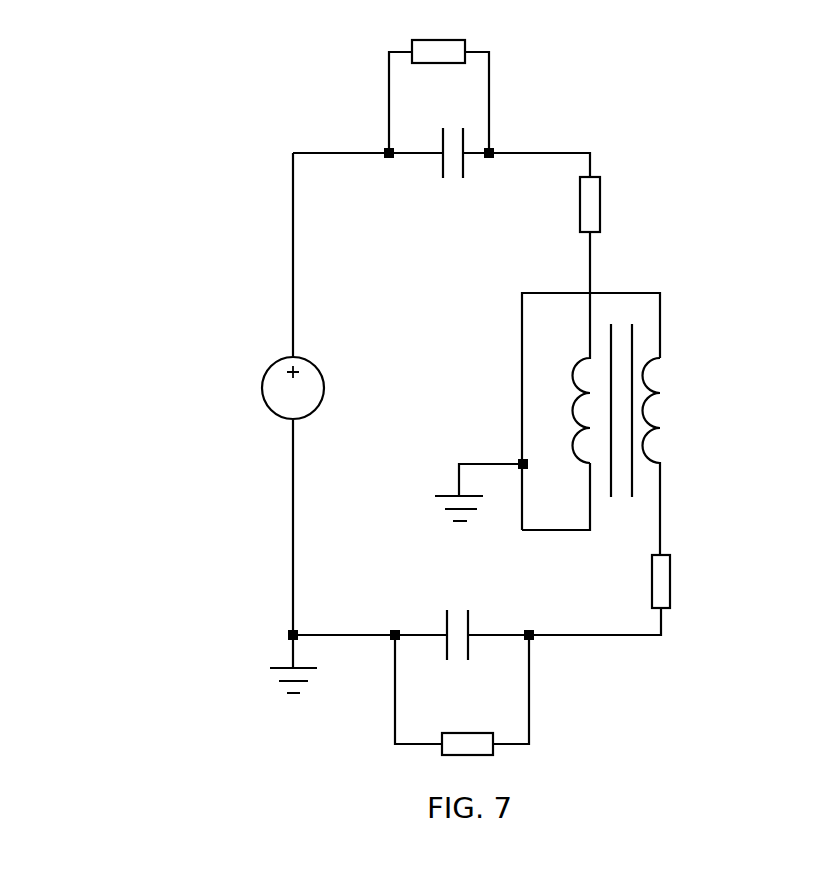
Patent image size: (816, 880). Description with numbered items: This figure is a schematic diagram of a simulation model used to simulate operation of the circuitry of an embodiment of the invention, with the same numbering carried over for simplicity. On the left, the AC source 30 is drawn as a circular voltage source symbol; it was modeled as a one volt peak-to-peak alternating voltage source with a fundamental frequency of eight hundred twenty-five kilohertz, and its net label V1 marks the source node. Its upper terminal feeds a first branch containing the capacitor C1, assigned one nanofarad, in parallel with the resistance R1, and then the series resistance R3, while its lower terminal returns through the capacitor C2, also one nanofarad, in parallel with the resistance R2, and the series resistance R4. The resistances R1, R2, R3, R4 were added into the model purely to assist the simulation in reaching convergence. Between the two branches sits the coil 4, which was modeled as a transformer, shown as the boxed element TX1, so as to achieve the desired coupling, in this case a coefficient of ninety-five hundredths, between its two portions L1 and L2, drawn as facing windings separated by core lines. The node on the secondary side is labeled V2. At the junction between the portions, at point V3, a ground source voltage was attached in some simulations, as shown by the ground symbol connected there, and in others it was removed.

The AC source 30 is at (203, 377).
The coil 4 is at (660, 424).
The resistance R1 is at (437, 52).
The resistance R2 is at (468, 743).
The resistance R3 is at (615, 195).
The resistance R4 is at (686, 572).
The capacitor C1 is at (456, 156).
The capacitor C2 is at (459, 637).
The transformer TX1 is at (613, 411).
The portion of the coil L1 is at (564, 378).
The portion of the coil L2 is at (666, 456).
The voltage source V1 is at (242, 407).
The voltage probe V2 is at (672, 497).
The point V3 is at (512, 418).